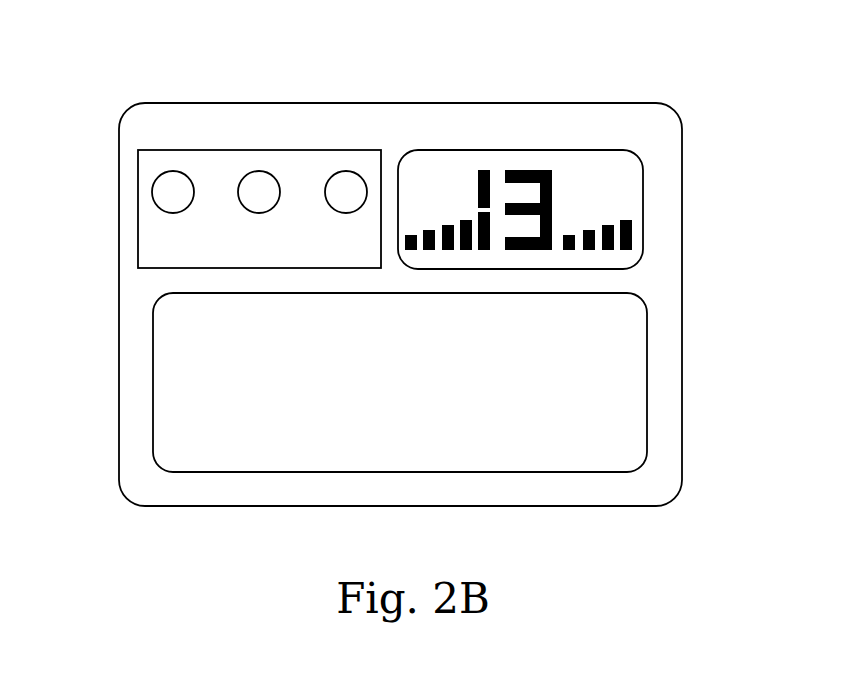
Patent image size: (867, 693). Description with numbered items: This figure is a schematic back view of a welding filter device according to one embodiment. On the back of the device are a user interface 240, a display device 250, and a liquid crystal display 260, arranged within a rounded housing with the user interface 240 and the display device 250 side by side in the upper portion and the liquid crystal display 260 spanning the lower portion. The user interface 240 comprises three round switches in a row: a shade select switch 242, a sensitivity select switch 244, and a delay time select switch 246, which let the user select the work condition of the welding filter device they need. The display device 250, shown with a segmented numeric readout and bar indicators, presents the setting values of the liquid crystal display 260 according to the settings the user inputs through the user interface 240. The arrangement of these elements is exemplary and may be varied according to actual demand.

The user interface 240 is at (150, 167).
The shade select switch 242 is at (173, 182).
The sensitivity select switch 244 is at (258, 182).
The delay time select switch 246 is at (345, 182).
The display device 250 is at (582, 175).
The liquid crystal display 260 is at (632, 383).